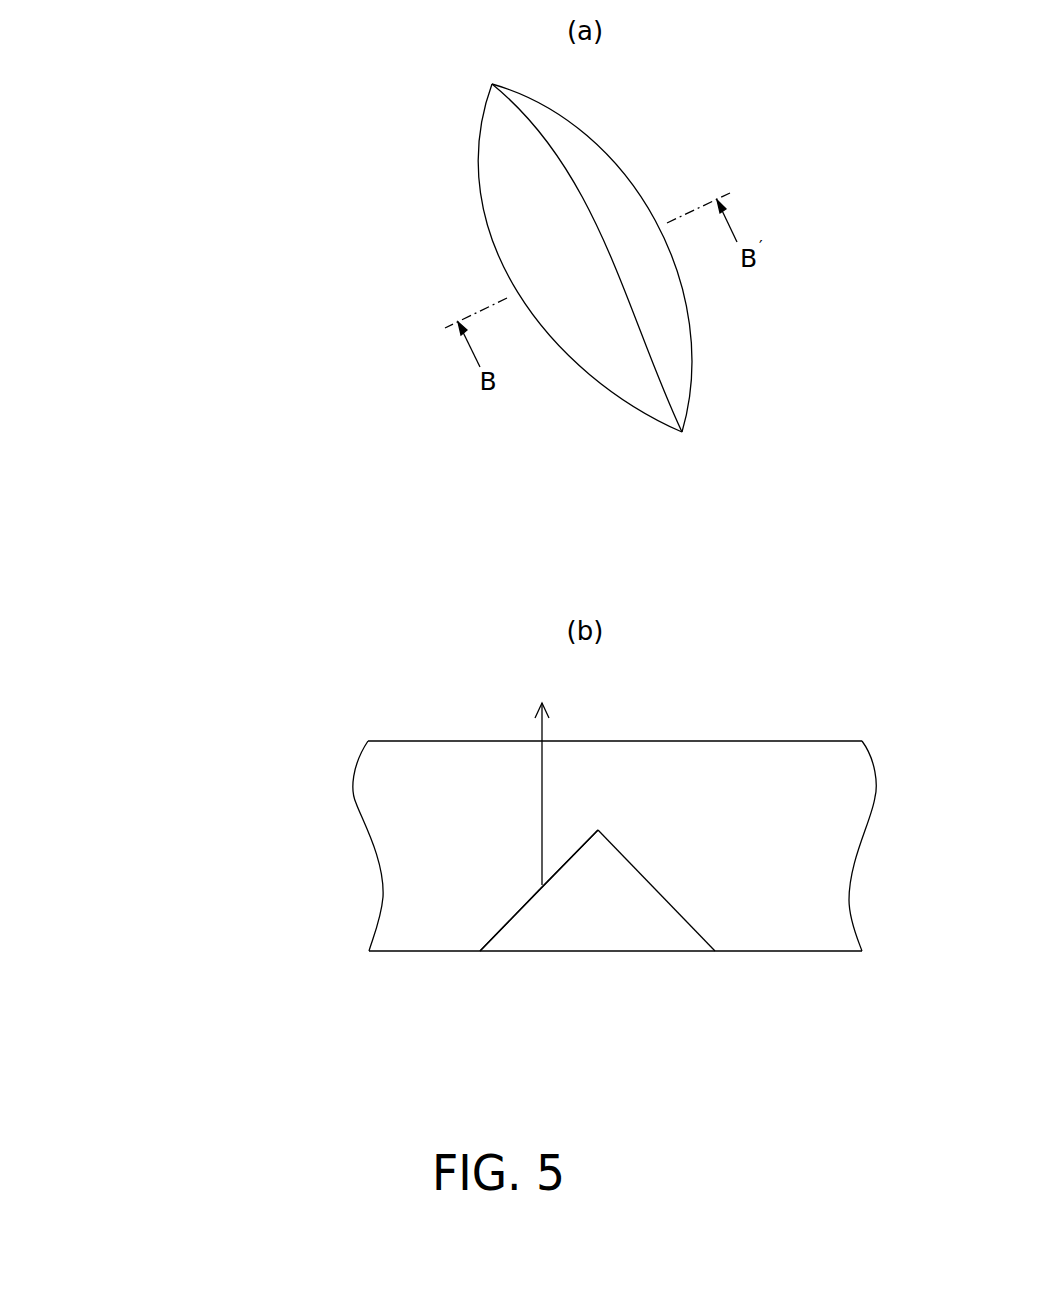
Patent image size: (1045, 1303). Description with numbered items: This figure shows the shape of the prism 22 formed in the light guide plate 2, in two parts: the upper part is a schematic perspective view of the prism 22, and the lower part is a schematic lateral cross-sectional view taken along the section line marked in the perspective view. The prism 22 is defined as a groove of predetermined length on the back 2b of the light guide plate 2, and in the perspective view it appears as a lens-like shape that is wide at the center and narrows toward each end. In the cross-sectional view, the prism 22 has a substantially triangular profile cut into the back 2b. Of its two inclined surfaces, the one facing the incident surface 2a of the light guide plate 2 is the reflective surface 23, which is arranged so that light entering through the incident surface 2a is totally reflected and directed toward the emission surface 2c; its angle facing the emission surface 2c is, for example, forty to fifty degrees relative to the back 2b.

The light guide plate 2 is at (855, 807).
The incident surface 2a is at (542, 885).
The back 2b is at (837, 951).
The emission surface 2c is at (837, 741).
The prism 22 is at (713, 423).
The reflective surface 23 is at (578, 347).